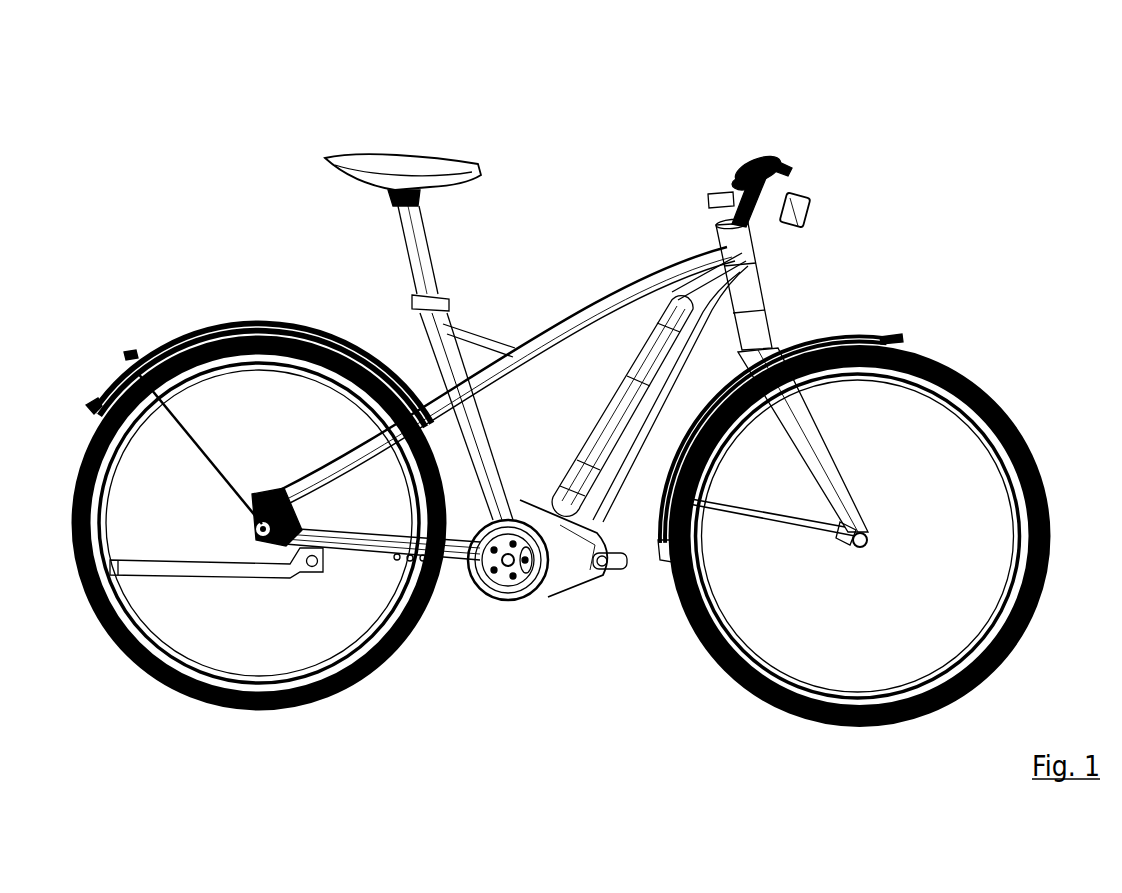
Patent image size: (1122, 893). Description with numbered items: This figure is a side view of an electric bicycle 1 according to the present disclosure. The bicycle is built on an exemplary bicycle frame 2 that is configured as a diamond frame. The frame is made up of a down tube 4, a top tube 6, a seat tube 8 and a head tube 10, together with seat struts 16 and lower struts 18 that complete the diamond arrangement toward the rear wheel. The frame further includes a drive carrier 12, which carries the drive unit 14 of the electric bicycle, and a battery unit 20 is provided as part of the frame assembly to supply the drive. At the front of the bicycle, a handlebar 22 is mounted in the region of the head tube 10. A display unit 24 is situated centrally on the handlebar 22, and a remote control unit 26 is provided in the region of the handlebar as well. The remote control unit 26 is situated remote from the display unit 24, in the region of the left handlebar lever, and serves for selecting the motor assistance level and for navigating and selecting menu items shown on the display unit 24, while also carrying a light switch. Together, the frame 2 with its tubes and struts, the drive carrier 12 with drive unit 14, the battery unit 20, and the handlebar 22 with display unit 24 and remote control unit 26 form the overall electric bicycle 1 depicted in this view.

The electric bicycle 1 is at (320, 142).
The bicycle frame 2 is at (657, 255).
The down tube 4 is at (620, 450).
The top tube 6 is at (575, 312).
The seat tube 8 is at (477, 460).
The head tube 10 is at (760, 287).
The drive carrier 12 is at (540, 517).
The drive unit 14 is at (533, 597).
The seat struts 16 is at (320, 457).
The lower struts 18 is at (357, 547).
The battery unit 20 is at (610, 407).
The handlebar 22 is at (760, 145).
The display unit 24 is at (773, 158).
The remote control unit 26 is at (797, 193).